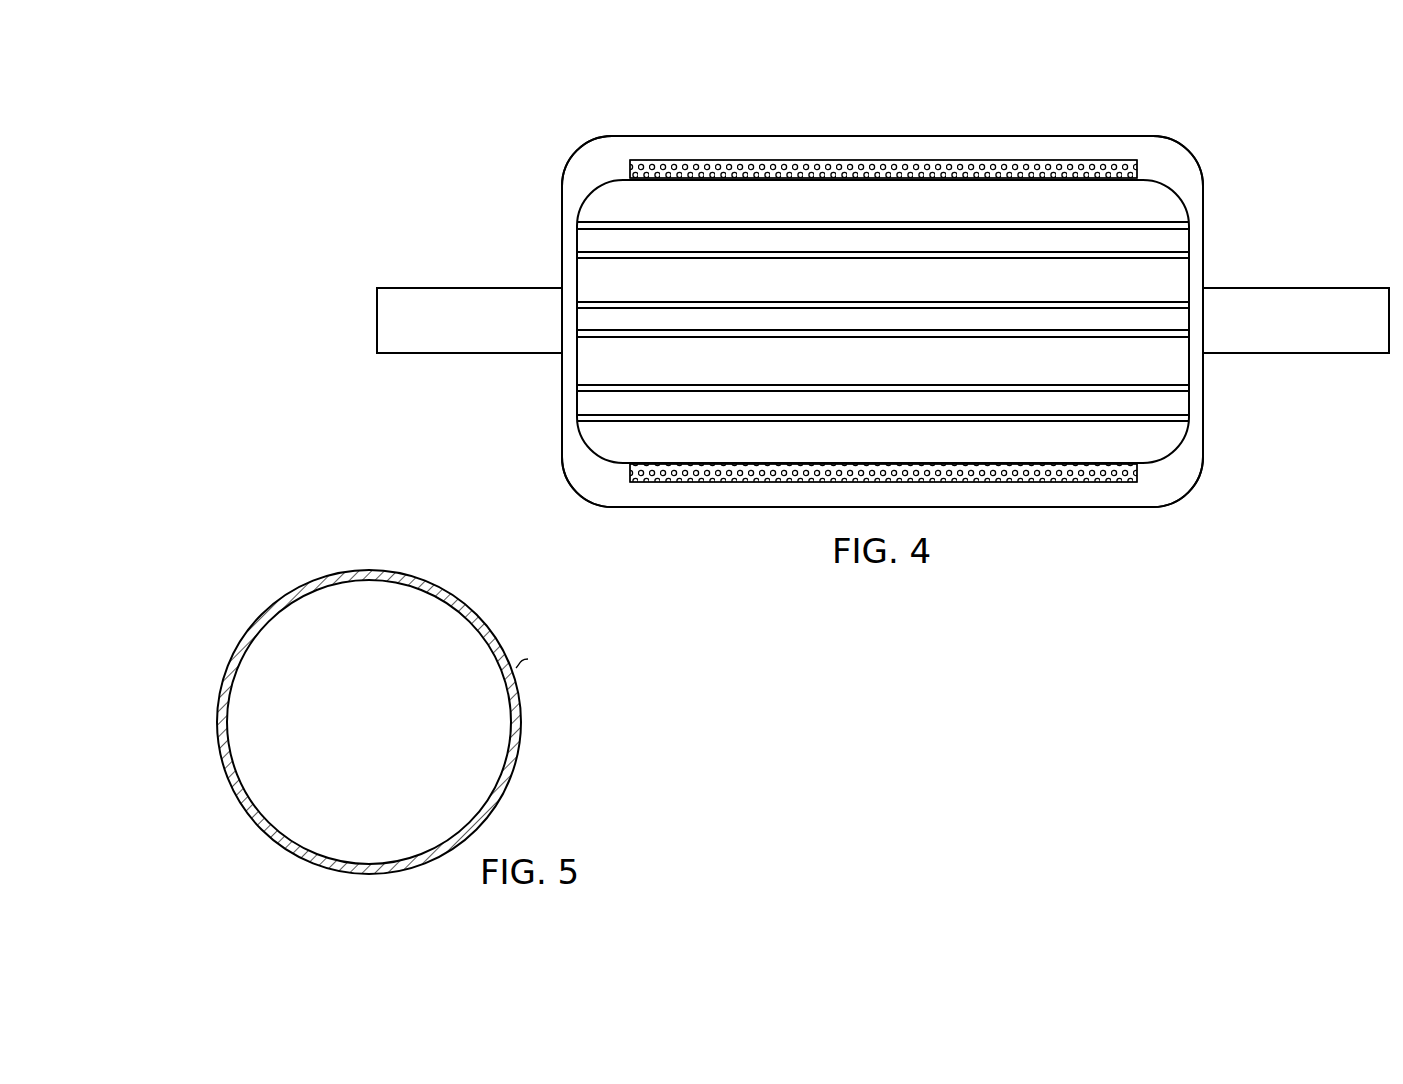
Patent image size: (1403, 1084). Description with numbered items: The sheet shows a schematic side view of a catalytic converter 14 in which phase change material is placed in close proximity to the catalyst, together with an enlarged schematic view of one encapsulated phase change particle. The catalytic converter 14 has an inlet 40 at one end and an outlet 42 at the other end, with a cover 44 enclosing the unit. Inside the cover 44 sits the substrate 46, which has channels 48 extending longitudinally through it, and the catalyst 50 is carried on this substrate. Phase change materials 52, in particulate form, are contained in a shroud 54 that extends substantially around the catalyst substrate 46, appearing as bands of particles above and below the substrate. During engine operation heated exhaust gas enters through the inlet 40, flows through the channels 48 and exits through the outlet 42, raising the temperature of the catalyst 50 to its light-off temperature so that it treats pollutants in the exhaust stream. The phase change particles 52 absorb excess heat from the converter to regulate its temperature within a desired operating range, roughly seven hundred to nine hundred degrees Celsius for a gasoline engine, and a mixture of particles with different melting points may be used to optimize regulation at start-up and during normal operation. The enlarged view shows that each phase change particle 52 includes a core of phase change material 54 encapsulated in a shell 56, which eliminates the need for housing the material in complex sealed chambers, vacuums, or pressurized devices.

In FIG. 4, the catalytic converter 14 is at (1012, 114).
In FIG. 4, the inlet 40 is at (432, 296).
In FIG. 4, the outlet 42 is at (1335, 296).
In FIG. 4, the cover 44 is at (1155, 148).
In FIG. 4, the substrate 46 is at (592, 366).
In FIG. 4, the channels 48 is at (1177, 239).
In FIG. 4, the catalyst 50 is at (712, 259).
In FIG. 4, the phase change materials 52 is at (858, 160).
In FIG. 5, the phase change materials 52 is at (268, 561).
In FIG. 4, the shroud 54 is at (630, 170).
In FIG. 5, the shroud 54 is at (366, 789).
In FIG. 5, the shell 56 is at (519, 738).